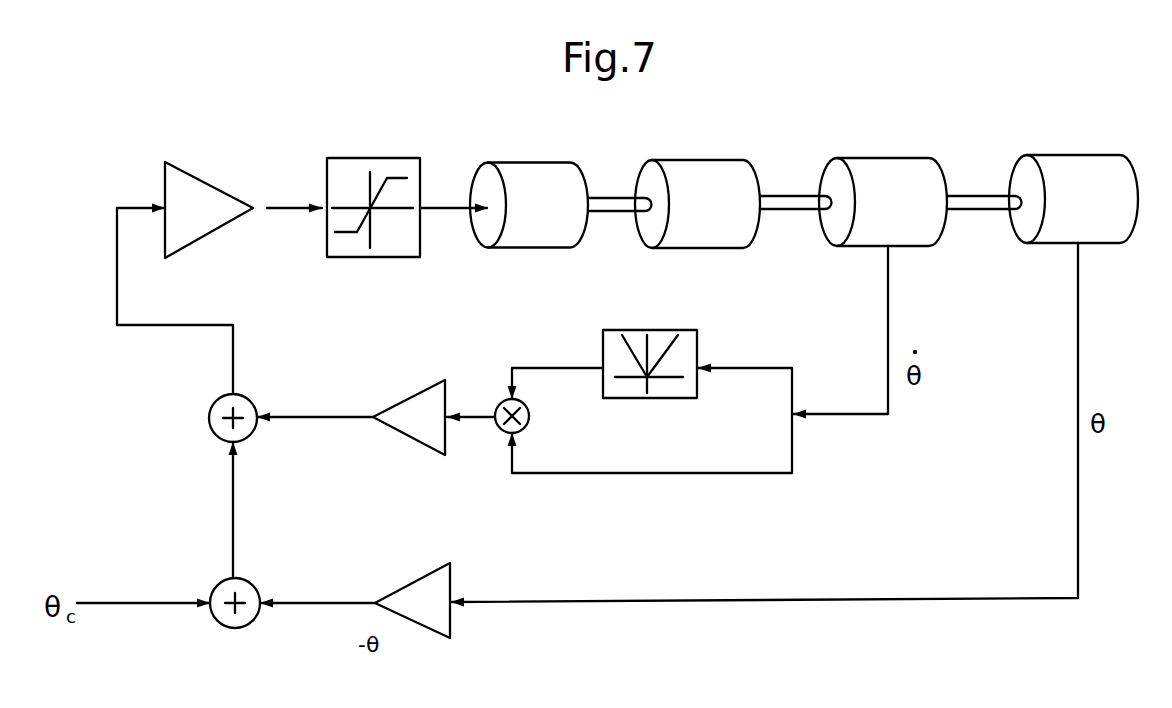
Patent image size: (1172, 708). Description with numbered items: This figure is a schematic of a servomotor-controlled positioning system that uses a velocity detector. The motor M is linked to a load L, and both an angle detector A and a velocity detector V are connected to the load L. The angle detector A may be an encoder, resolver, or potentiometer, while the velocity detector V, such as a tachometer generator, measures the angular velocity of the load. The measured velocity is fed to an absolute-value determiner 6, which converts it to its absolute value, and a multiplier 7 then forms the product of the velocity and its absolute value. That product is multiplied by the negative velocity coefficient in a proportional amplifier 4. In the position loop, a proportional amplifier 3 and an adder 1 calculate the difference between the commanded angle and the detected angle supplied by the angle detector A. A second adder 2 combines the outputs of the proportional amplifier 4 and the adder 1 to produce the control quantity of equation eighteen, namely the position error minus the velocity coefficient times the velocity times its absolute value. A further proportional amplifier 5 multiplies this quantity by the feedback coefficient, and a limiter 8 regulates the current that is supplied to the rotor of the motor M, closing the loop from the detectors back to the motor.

The adder 1 is at (239, 626).
The adder 2 is at (212, 414).
The proportional amplifier 3 is at (417, 586).
The proportional amplifier 4 is at (418, 437).
The proportional amplifier 5 is at (208, 186).
The absolute-value determiner 6 is at (688, 355).
The multiplier 7 is at (498, 404).
The limiter 8 is at (384, 161).
The motor M is at (550, 167).
The load L is at (720, 170).
The velocity detector V is at (900, 168).
The angle detector A is at (1082, 168).